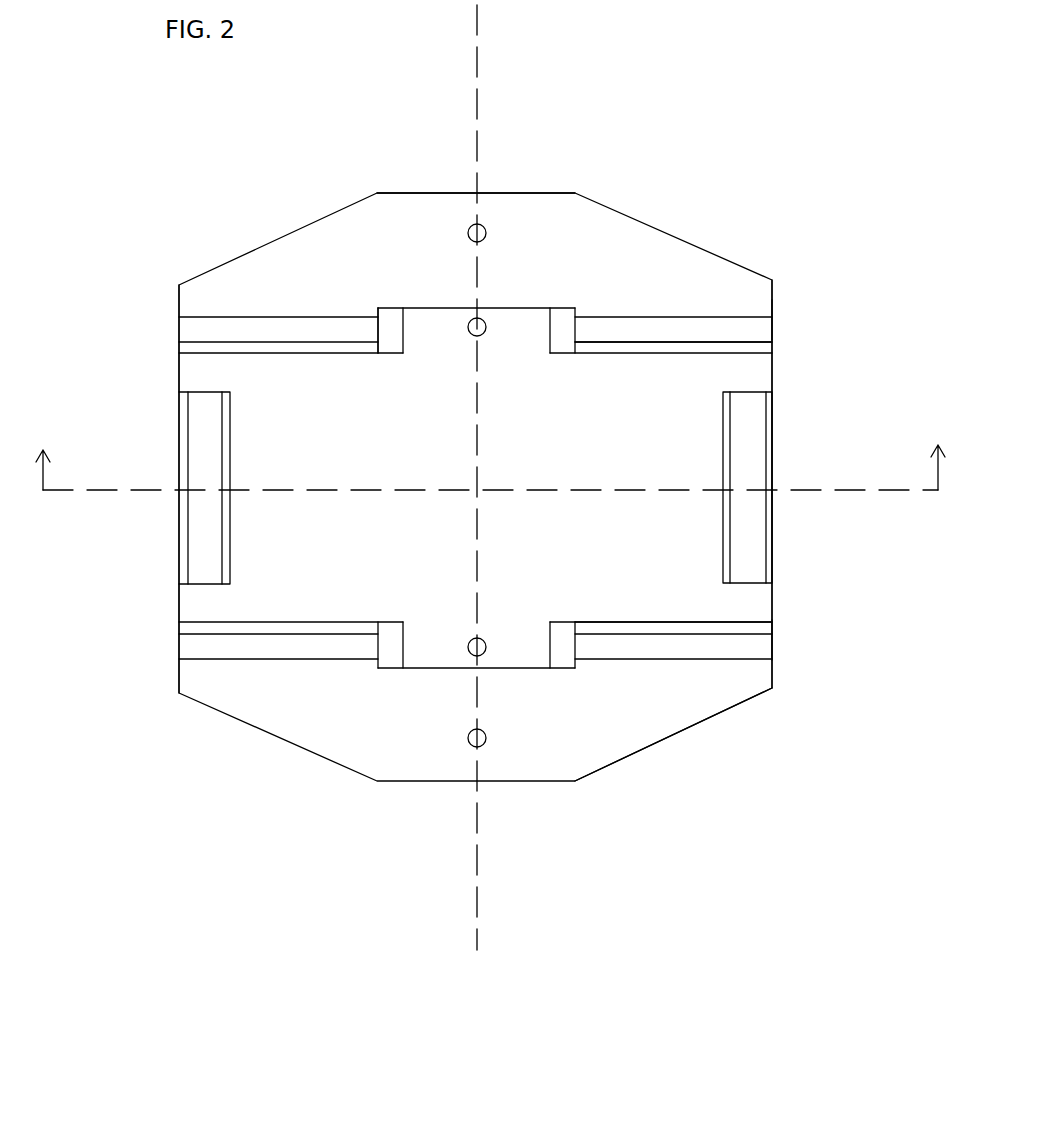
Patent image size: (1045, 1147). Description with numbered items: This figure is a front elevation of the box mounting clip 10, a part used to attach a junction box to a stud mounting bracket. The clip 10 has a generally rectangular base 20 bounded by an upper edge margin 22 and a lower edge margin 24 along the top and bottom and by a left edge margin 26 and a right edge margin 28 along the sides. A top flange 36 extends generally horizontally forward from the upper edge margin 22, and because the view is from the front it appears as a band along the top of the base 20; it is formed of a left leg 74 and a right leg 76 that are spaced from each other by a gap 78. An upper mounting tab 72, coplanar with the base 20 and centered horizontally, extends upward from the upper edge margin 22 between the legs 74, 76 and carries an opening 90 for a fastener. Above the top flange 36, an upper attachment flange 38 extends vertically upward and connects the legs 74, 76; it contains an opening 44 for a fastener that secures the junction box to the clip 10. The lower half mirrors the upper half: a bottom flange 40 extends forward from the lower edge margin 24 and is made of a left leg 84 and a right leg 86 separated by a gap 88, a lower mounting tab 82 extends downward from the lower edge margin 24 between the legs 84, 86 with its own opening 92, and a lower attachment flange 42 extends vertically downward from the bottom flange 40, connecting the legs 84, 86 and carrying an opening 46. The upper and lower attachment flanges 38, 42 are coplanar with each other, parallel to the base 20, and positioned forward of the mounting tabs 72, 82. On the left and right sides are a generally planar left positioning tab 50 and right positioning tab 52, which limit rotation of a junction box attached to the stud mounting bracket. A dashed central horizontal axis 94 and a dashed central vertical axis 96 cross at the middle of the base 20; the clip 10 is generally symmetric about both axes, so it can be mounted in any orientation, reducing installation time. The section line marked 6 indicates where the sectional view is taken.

The box mounting clip 10 is at (694, 165).
The base 20 is at (192, 368).
The upper edge margin 22 is at (760, 348).
The lower edge margin 24 is at (745, 620).
The left edge margin 26 is at (179, 605).
The right edge margin 28 is at (775, 372).
The top flange 36 is at (780, 312).
The upper attachment flange 38 is at (522, 222).
The bottom flange 40 is at (788, 640).
The lower attachment flange 42 is at (603, 752).
The opening 44 is at (476, 224).
The opening 46 is at (478, 748).
The left positioning tab 50 is at (180, 477).
The right positioning tab 52 is at (765, 468).
The upper mounting tab 72 is at (393, 338).
The left leg 74 is at (288, 333).
The right leg 76 is at (628, 330).
The gap 78 is at (381, 335).
The lower mounting tab 82 is at (417, 643).
The left leg 84 is at (287, 647).
The right leg 86 is at (609, 647).
The gap 88 is at (393, 647).
The opening 90 is at (487, 327).
The opening 92 is at (487, 643).
The central horizontal axis 94 is at (615, 490).
The central vertical axis 96 is at (484, 935).
The section line 6- 6 is at (488, 450).